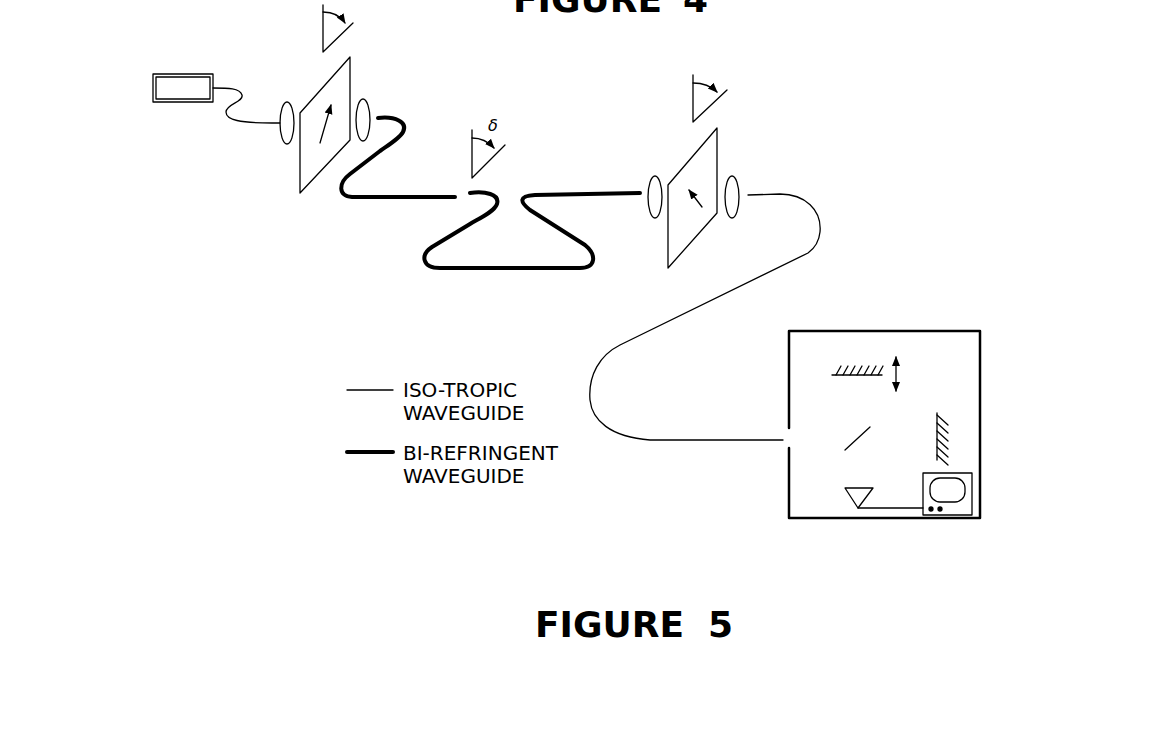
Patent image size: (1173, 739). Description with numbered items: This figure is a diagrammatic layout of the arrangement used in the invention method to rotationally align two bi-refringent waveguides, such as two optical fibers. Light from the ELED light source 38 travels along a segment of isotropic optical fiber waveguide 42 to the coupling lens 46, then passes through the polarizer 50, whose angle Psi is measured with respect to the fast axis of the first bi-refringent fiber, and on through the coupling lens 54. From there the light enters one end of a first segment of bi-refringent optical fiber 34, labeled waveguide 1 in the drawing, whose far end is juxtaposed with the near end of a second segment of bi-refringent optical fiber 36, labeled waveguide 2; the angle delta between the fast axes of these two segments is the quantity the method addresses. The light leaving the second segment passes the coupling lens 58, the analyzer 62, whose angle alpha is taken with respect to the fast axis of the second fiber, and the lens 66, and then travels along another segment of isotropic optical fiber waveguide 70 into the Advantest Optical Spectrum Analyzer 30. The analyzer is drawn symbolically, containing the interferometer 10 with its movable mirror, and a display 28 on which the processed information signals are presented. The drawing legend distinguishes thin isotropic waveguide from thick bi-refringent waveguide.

The ELED light source 38 is at (174, 73).
The isotropic optical fiber waveguide 42 is at (232, 125).
The coupling lens 46 is at (288, 145).
The polarizer 50 is at (348, 57).
The coupling lens 54 is at (367, 100).
The first segment of bi-refringent optical fiber 34 is at (398, 171).
The bi-refringent waveguide 1 is at (417, 168).
The second segment of bi-refringent optical fiber 36 is at (532, 226).
The bi-refringent waveguide 2 is at (547, 173).
The coupling lens 58 is at (650, 222).
The analyzer 62 is at (727, 127).
The lens 66 is at (738, 218).
The isotropic optical fiber waveguide 70 is at (662, 322).
The Advantest Optical Spectrum Analyzer 30 is at (876, 423).
The interferometer 10 is at (911, 375).
The display 28 is at (922, 473).